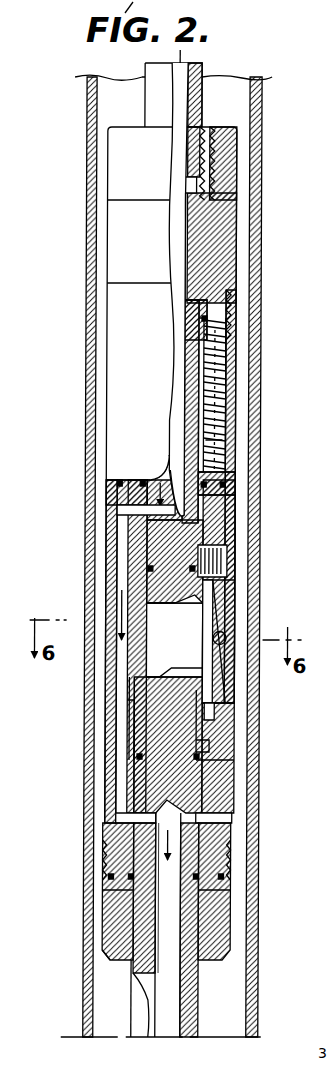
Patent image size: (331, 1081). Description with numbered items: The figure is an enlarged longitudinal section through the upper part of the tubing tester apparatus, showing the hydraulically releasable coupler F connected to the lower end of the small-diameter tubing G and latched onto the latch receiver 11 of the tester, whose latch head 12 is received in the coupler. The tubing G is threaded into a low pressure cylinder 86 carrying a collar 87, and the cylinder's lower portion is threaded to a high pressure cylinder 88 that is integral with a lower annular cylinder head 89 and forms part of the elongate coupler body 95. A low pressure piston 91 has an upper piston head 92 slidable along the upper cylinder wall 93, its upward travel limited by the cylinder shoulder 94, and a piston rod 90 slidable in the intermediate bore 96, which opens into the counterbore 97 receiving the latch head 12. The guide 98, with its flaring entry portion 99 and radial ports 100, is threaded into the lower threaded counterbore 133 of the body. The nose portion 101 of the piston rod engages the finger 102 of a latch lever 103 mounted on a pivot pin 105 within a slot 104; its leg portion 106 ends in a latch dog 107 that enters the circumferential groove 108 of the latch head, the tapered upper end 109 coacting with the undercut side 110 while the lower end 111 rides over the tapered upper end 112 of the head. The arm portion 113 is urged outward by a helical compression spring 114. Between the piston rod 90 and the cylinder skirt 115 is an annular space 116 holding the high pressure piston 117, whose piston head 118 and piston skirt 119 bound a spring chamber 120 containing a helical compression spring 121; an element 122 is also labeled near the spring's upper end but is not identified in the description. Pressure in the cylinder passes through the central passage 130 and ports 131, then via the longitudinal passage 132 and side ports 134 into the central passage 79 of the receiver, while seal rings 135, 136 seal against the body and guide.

The tubing G is at (201, 71).
The latch receiver 11 is at (188, 1003).
The latch head 12 is at (152, 742).
The central passage 79 is at (165, 942).
The low pressure cylinder 86 is at (215, 251).
The collar 87 is at (228, 170).
The high pressure cylinder 88 is at (239, 458).
The cylinder head 89 is at (205, 532).
The piston rod 90 is at (227, 481).
The low pressure piston 91 is at (184, 358).
The piston head 92 is at (207, 307).
The upper cylinder wall 93 is at (217, 334).
The cylinder shoulder 94 is at (200, 301).
The coupler body 95 is at (100, 502).
The intermediate bore 96 is at (153, 551).
The counterbore 97 is at (155, 658).
The guide 98 is at (117, 915).
The entry portion 99 is at (130, 960).
The radial ports 100 is at (223, 892).
The nose portion 101 is at (196, 616).
The finger 102 is at (190, 635).
The latch lever 103 is at (238, 686).
The slot 104 is at (222, 732).
The pivot pin 105 is at (228, 640).
The leg portion 106 is at (205, 707).
The latch dog 107 is at (198, 750).
The circumferential groove 108 is at (142, 728).
The upper end of latch finger 109 is at (213, 712).
The undercut side 110 is at (163, 686).
The lower end of latch finger 111 is at (202, 756).
The tapered upper end 112 is at (138, 679).
The arm portion 113 is at (227, 590).
The helical compression spring 114 is at (230, 563).
The cylinder skirt 115 is at (230, 370).
The annular space 116 is at (200, 518).
The high pressure piston 117 is at (214, 440).
The piston head 118 is at (137, 480).
The piston skirt 119 is at (200, 418).
The spring chamber 120 is at (222, 389).
The helical compression spring 121 is at (217, 385).
The retainer block 122 is at (200, 337).
The central passage 130 is at (172, 440).
The ports 131 is at (147, 523).
The longitudinal passage 132 is at (118, 574).
The threaded counterbore 133 is at (208, 818).
The side ports 134 is at (152, 826).
The seal ring 135 is at (138, 757).
The seal ring 136 is at (201, 876).
The hydraulically releasable coupler F is at (239, 418).